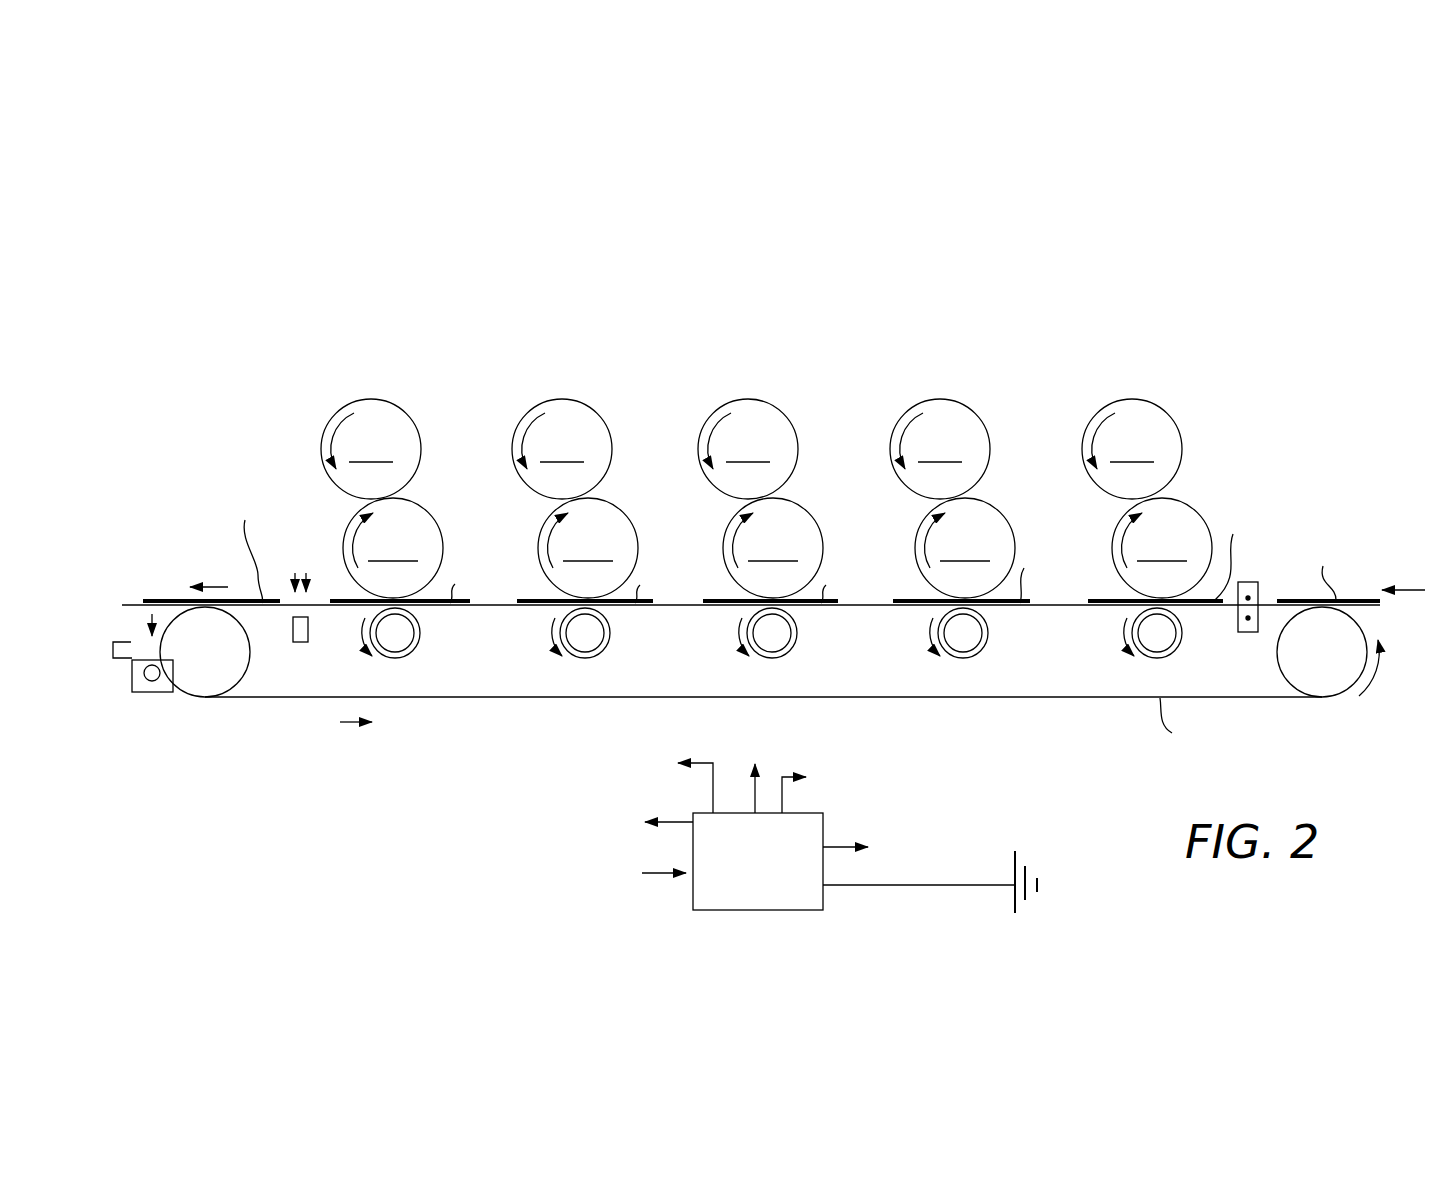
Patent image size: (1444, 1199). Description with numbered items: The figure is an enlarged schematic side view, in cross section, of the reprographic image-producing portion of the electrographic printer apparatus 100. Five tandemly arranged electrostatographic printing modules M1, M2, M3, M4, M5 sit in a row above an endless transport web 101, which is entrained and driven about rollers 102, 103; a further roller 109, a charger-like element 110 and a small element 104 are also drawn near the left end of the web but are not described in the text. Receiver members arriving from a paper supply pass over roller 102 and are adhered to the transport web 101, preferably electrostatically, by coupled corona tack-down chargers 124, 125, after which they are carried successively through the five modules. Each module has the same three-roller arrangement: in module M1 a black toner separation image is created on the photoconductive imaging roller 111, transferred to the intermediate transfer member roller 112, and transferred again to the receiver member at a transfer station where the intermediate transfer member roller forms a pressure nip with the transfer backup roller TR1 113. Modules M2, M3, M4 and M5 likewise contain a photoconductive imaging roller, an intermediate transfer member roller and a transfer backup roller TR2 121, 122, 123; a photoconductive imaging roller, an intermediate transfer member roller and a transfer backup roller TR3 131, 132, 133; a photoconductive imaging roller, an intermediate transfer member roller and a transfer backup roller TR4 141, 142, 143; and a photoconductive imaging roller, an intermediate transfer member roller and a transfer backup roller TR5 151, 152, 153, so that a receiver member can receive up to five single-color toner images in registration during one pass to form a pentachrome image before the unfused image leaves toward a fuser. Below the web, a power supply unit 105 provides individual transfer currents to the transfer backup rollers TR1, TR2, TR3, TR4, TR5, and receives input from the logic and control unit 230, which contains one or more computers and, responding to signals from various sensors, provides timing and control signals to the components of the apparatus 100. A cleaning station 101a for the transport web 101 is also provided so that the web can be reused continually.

The electrographic printer apparatus 100 is at (1038, 283).
The endless transport web 101 is at (1060, 698).
The cleaning station 101a is at (128, 634).
The roller 102 is at (1365, 625).
The roller 103 is at (200, 695).
The sensor 104 is at (306, 642).
The power supply unit 105 is at (742, 820).
The drive roller 109 is at (262, 603).
The corona charger 110 is at (312, 580).
The photoconductive imaging roller PC1 111 is at (1160, 418).
The intermediate transfer member roller ITM1 112 is at (1190, 500).
The transfer backup roller TR1 113 is at (1169, 651).
The photoconductive imaging roller PC2 121 is at (975, 418).
The intermediate transfer member roller ITM2 122 is at (997, 515).
The transfer backup roller TR2 123 is at (996, 643).
The photoconductive imaging roller PC3 131 is at (785, 418).
The intermediate transfer member roller ITM3 132 is at (805, 515).
The transfer backup roller TR3 133 is at (806, 643).
The photoconductive imaging roller PC4 141 is at (598, 430).
The intermediate transfer member roller ITM4 142 is at (620, 525).
The transfer backup roller TR4 143 is at (619, 645).
The photoconductive imaging roller PC5 151 is at (400, 418).
The intermediate transfer member roller ITM5 152 is at (425, 515).
The transfer backup roller TR5 153 is at (428, 647).
The corona tack-down charger 124 is at (1258, 588).
The corona tack-down charger 125 is at (1258, 622).
The logic and control unit 230 is at (566, 872).
The printing module M1 is at (1127, 378).
The printing module M2 is at (927, 374).
The printing module M3 is at (737, 374).
The printing module M4 is at (558, 370).
The printing module M5 is at (358, 370).
The transfer backup roller TR1 is at (1147, 651).
The transfer backup roller TR2 is at (980, 630).
The transfer backup roller TR3 is at (790, 630).
The transfer backup roller TR4 is at (598, 630).
The transfer backup roller TR5 is at (411, 630).